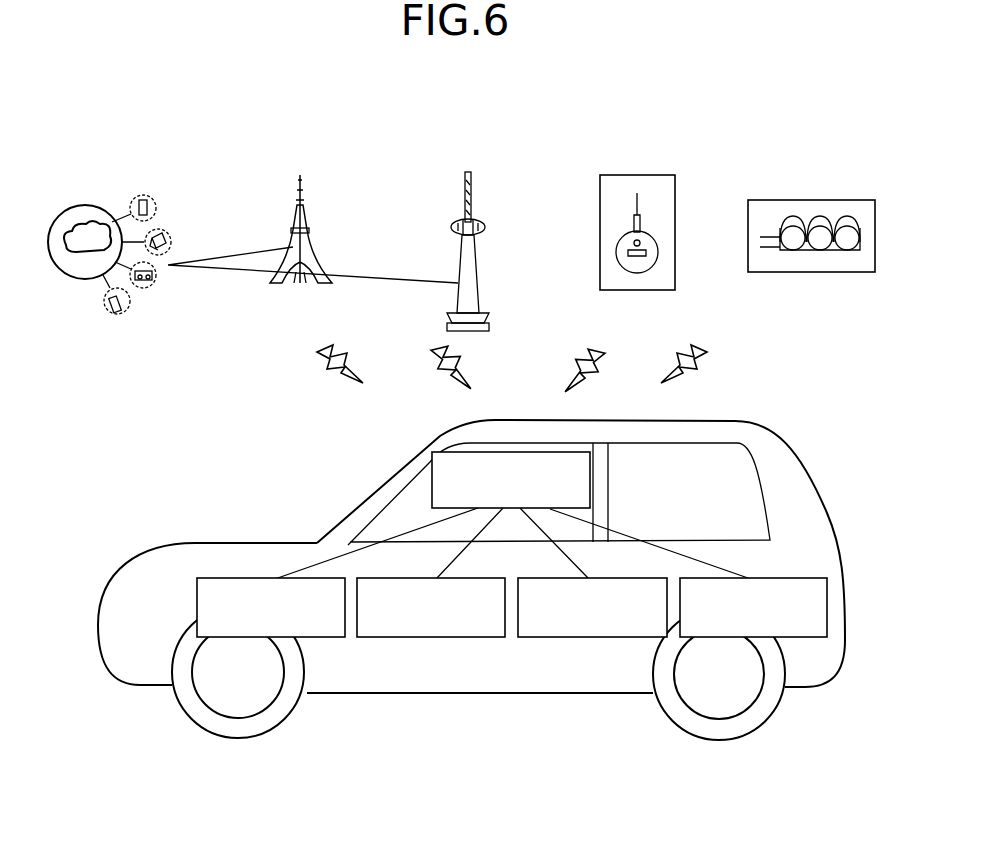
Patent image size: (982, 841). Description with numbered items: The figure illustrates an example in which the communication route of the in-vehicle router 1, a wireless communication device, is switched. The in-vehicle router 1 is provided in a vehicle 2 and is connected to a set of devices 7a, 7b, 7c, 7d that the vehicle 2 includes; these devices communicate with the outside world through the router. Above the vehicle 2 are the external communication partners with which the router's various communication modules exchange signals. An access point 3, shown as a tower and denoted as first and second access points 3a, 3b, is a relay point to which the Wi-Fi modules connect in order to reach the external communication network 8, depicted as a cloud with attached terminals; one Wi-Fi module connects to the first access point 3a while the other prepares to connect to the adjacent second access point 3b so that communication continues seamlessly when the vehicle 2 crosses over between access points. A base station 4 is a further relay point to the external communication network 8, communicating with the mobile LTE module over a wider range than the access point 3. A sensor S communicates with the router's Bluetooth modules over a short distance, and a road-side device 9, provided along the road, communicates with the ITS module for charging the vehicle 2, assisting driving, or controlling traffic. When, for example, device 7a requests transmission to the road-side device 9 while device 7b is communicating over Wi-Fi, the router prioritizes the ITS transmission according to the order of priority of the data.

The in-vehicle router 1 is at (507, 450).
The vehicle 2 is at (757, 437).
The access point 3 is at (319, 206).
The first access point 3a is at (319, 206).
The second access point 3b is at (300, 205).
The base station 4 is at (466, 200).
The device 7a is at (319, 639).
The device 7b is at (430, 639).
The device 7c is at (574, 639).
The device 7d is at (721, 639).
The external communication network 8 is at (85, 205).
The road-side device 9 is at (808, 200).
The sensor S is at (636, 175).